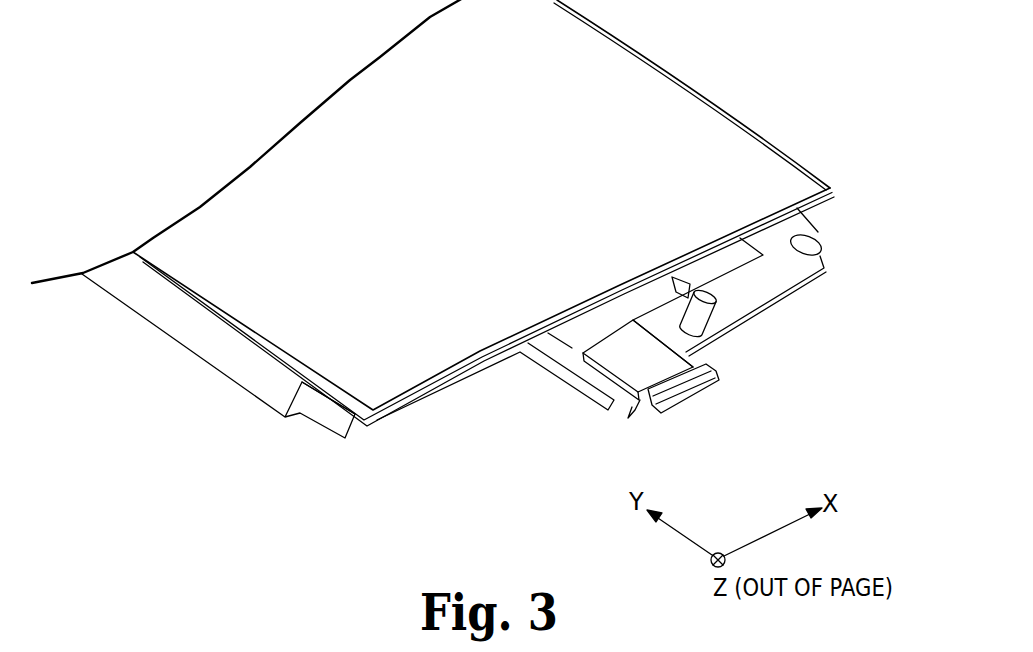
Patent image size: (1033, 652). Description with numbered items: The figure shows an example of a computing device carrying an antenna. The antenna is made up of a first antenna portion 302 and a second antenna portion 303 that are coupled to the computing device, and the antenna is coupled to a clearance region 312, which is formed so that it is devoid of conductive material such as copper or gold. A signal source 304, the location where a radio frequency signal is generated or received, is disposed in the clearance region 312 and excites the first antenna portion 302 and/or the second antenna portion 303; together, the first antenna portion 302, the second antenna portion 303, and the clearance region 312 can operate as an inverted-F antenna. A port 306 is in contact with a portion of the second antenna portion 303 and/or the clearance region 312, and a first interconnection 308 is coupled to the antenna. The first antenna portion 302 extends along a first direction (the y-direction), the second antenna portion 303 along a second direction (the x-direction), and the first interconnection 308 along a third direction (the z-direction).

The first antenna portion 302 is at (816, 251).
The second antenna portion 303 is at (748, 296).
The signal source 304 is at (686, 285).
The port 306 is at (713, 370).
The first interconnection 308 is at (698, 317).
The clearance region 312 is at (570, 337).